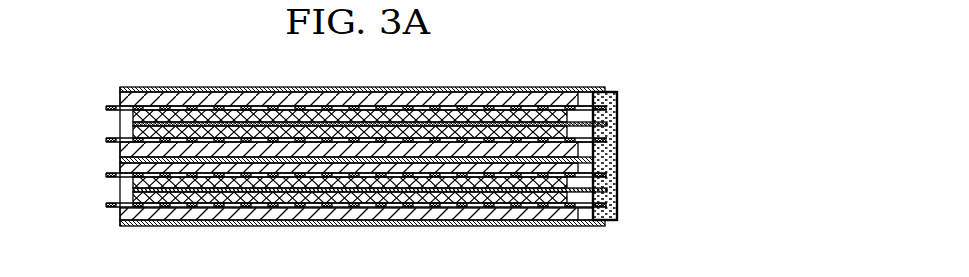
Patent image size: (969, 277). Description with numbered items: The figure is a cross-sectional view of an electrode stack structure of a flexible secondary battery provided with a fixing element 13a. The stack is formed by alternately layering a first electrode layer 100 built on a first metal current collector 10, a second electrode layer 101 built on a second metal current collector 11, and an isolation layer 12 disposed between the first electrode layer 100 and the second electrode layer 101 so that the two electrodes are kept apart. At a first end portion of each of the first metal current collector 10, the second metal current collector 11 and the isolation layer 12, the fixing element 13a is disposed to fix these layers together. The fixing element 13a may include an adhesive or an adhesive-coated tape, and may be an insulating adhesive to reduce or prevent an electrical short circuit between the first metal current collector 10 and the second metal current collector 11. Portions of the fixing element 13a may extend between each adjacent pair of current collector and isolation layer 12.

The first metal current collector 10 is at (119, 146).
The second metal current collector 11 is at (119, 92).
The isolation layer 12 is at (133, 119).
The fixing element 13a is at (618, 133).
The first electrode layer 100 is at (131, 117).
The second electrode layer 101 is at (119, 97).